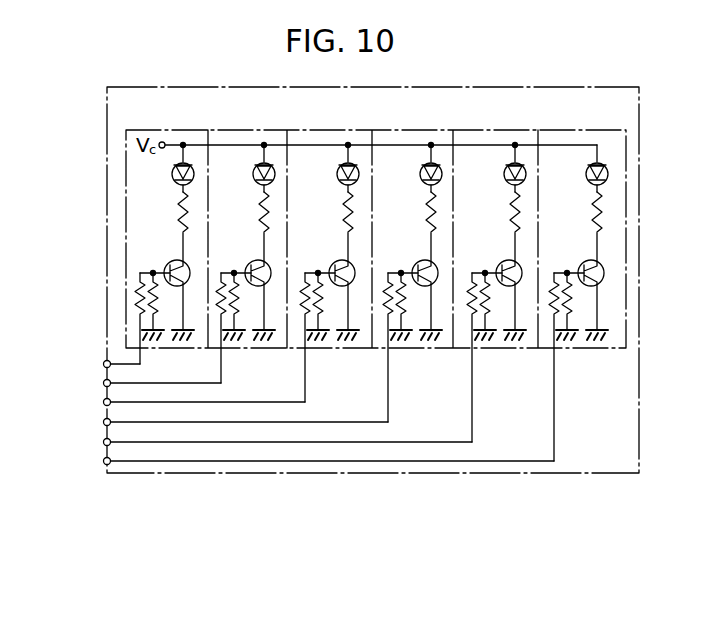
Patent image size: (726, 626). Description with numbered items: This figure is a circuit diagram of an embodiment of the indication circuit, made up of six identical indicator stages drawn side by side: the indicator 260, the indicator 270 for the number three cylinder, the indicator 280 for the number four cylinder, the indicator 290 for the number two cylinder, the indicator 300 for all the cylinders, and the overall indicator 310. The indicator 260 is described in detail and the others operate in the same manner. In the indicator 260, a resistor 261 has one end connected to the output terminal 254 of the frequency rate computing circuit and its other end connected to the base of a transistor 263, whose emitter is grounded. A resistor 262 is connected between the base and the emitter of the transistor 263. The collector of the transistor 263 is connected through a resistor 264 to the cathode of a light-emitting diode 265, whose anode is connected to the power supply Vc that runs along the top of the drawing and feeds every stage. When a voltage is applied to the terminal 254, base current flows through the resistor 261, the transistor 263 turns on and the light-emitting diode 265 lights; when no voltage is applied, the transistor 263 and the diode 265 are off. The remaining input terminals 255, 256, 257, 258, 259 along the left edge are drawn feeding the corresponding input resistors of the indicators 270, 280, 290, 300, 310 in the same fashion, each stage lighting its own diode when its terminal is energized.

The indicator 260 is at (170, 128).
The indicator for the No. 3 cylinder 270 is at (268, 128).
The indicator for the No. 4 cylinder 280 is at (349, 128).
The indicator for the No. 2 cylinder 290 is at (432, 128).
The indicator for all the cylinders 300 is at (518, 128).
The overall indicator 310 is at (600, 128).
The light-emitting diode 265 is at (172, 174).
The resistor 264 is at (178, 198).
The transistor 263 is at (175, 259).
The resistor 262 is at (151, 270).
The resistor 261 is at (135, 300).
The output terminal 254 is at (104, 362).
The input terminal 255 is at (104, 381).
The input terminal 256 is at (104, 402).
The input terminal 257 is at (104, 422).
The input terminal 258 is at (104, 442).
The input terminal 259 is at (104, 464).